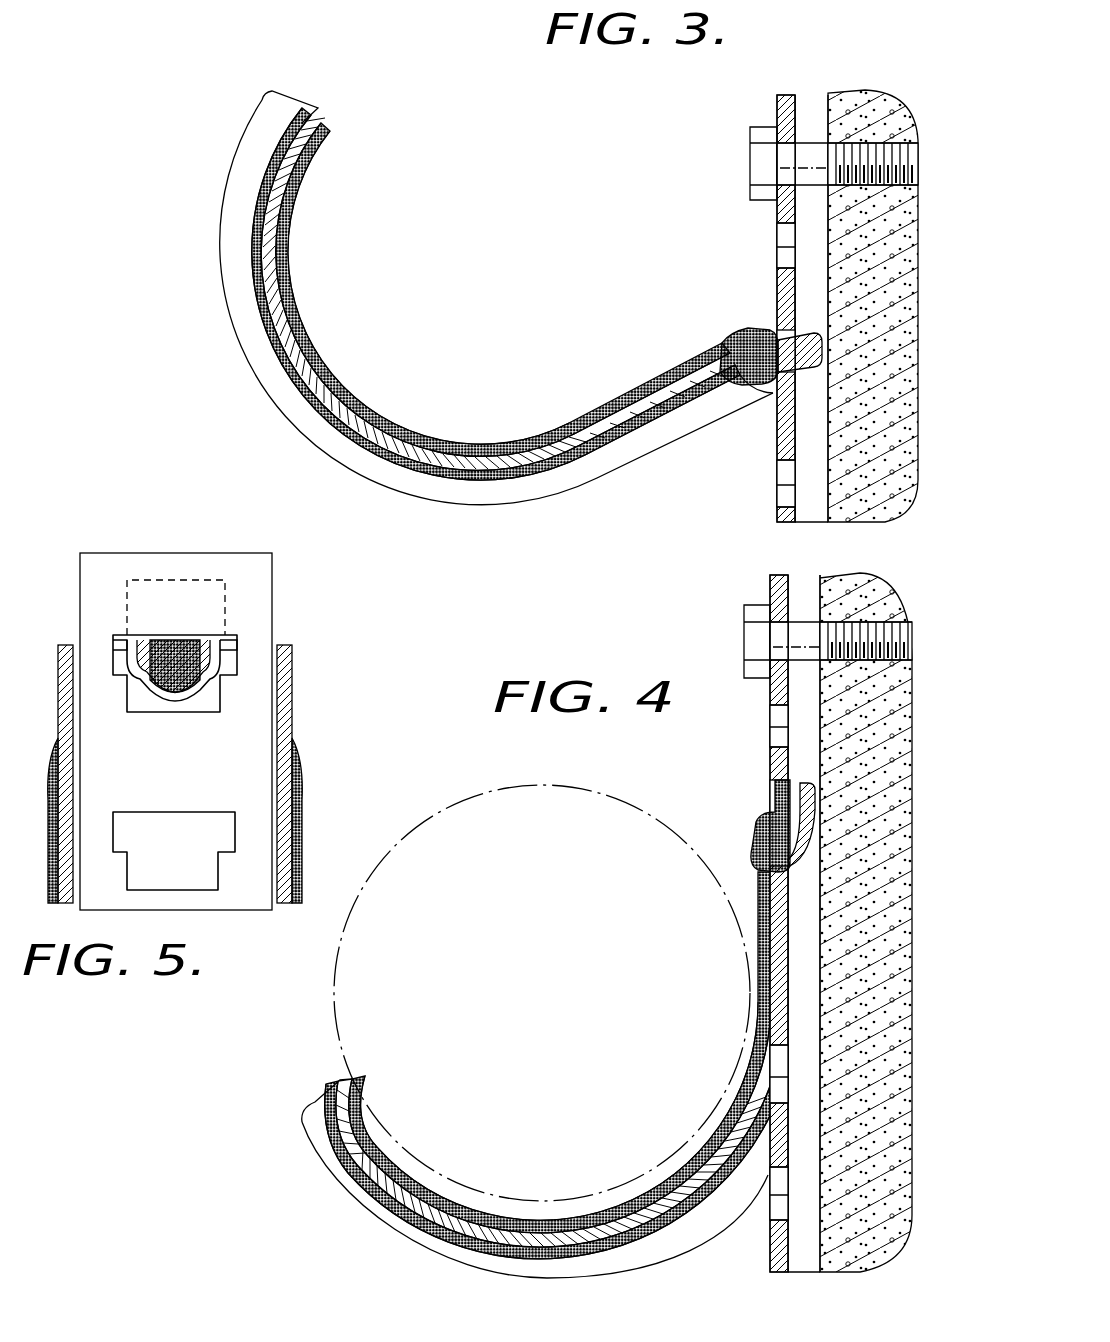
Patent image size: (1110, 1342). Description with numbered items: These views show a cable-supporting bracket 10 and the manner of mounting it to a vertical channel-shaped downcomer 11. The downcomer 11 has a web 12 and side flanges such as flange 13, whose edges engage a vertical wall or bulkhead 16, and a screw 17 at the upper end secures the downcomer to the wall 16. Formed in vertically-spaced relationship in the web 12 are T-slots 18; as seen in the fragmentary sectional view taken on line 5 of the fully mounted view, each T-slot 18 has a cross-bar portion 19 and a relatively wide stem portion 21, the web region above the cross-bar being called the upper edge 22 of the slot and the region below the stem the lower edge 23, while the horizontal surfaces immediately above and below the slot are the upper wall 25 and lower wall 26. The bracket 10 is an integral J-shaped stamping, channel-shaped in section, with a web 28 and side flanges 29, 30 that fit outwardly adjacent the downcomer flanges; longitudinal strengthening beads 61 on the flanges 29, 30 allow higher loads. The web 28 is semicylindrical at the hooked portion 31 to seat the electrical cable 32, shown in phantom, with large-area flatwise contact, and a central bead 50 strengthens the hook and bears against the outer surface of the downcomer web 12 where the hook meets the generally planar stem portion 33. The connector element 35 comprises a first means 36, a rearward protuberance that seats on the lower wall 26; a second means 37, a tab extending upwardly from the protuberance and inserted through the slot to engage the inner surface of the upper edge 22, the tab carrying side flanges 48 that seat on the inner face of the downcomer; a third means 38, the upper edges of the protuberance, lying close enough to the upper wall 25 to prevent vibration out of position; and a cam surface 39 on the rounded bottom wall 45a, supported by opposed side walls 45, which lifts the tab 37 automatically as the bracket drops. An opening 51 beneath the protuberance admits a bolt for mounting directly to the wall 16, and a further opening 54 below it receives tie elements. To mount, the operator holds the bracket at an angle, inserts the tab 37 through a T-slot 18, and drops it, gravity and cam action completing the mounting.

In FIG. 4, the section line 5- 5 is at (768, 760).
In FIG. 3, the bracket 10 is at (200, 348).
In FIG. 4, the bracket 10 is at (352, 1270).
In FIG. 3, the downcomer 11 is at (776, 100).
In FIG. 4, the downcomer 11 is at (768, 1253).
In FIG. 3, the web 12 is at (779, 524).
In FIG. 4, the web 12 is at (760, 1050).
In FIG. 5, the web 12 is at (176, 731).
In FIG. 3, the side flange 13 is at (811, 522).
In FIG. 4, the side flange 13 is at (790, 1274).
In FIG. 3, the wall 16 is at (872, 95).
In FIG. 4, the wall 16 is at (850, 1274).
In FIG. 3, the screw 17 is at (752, 164).
In FIG. 4, the screw 17 is at (744, 640).
In FIG. 3, the T-slot 18 is at (776, 270).
In FIG. 4, the T-slot 18 is at (770, 733).
In FIG. 5, the T-slot 18 is at (134, 713).
In FIG. 3, the cross-bar portion 19 is at (776, 236).
In FIG. 5, the cross-bar portion 19 is at (115, 647).
In FIG. 3, the stem portion 21 is at (776, 262).
In FIG. 5, the stem portion 21 is at (216, 700).
In FIG. 5, the upper edge of the slot 22 is at (192, 626).
In FIG. 5, the lower edge of the slot 23 is at (192, 749).
In FIG. 5, the upper wall of the slot 25 is at (206, 637).
In FIG. 5, the lower wall of the slot 26 is at (150, 714).
In FIG. 3, the web 28 is at (284, 258).
In FIG. 4, the web 28 is at (424, 1176).
In FIG. 5, the web 28 is at (175, 774).
In FIG. 5, the side flange 29 is at (290, 738).
In FIG. 3, the side flange 30 is at (507, 500).
In FIG. 4, the side flange 30 is at (572, 1280).
In FIG. 5, the side flange 30 is at (62, 902).
In FIG. 3, the hooked portion 31 is at (392, 392).
In FIG. 4, the hooked portion 31 is at (514, 1190).
In FIG. 4, the electrical cable 32 is at (476, 788).
In FIG. 3, the stem portion 33 is at (662, 372).
In FIG. 4, the stem portion 33 is at (752, 922).
In FIG. 3, the connector element 35 is at (812, 320).
In FIG. 4, the connector element 35 is at (780, 798).
In FIG. 5, the connector element 35 is at (176, 592).
In FIG. 4, the first means 36 is at (754, 848).
In FIG. 3, the second means 37 is at (797, 370).
In FIG. 4, the second means 37 is at (797, 786).
In FIG. 5, the second means 37 is at (216, 580).
In FIG. 3, the third means 38 is at (764, 336).
In FIG. 3, the cam surface 39 is at (726, 405).
In FIG. 5, the side wall 45 is at (147, 672).
In FIG. 5, the bottom wall 45a is at (203, 717).
In FIG. 5, the side flange 48 is at (138, 637).
In FIG. 3, the central bead 50 is at (292, 322).
In FIG. 4, the central bead 50 is at (602, 1226).
In FIG. 3, the opening 51 is at (702, 362).
In FIG. 4, the opening 51 is at (757, 880).
In FIG. 3, the opening 54 is at (656, 373).
In FIG. 4, the opening 54 is at (752, 932).
In FIG. 3, the strengthening bead 61 is at (536, 482).
In FIG. 4, the strengthening bead 61 is at (594, 1252).
In FIG. 5, the strengthening bead 61 is at (52, 740).